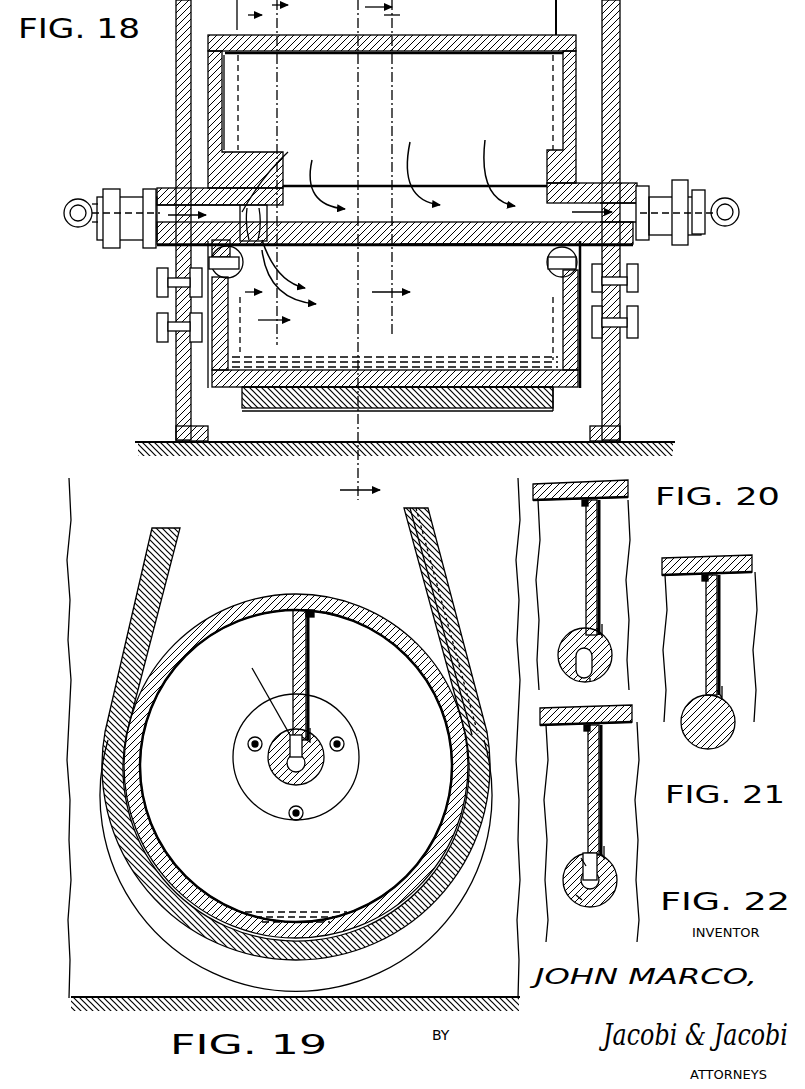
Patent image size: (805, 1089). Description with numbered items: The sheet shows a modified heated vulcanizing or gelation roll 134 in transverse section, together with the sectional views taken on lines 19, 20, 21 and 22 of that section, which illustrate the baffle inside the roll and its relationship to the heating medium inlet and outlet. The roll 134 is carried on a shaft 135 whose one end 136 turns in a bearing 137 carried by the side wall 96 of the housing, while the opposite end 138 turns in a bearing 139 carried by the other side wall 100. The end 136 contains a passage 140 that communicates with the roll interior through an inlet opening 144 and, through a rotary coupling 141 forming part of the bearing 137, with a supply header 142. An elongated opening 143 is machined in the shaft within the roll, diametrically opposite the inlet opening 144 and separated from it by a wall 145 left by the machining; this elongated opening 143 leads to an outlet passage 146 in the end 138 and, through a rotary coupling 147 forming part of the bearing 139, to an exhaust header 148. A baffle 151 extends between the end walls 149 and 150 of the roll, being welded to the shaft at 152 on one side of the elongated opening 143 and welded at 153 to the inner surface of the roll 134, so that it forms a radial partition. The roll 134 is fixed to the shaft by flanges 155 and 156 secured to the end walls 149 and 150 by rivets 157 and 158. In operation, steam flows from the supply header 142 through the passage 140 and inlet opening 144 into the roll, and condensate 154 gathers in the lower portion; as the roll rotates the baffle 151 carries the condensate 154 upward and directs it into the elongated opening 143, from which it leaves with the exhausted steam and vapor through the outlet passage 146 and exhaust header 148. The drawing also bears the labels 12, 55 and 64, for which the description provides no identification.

In FIG. 18, the tank wall 12 is at (488, 411).
In FIG. 19, the tank wall 12 is at (440, 572).
In FIG. 18, the section line 19— 19 is at (366, 262).
In FIG. 18, the section line 20— 20 is at (249, 183).
In FIG. 18, the section line 21— 21 is at (274, 174).
In FIG. 18, the section line 22— 22 is at (391, 167).
In FIG. 18, the trough 55 is at (565, 392).
In FIG. 19, the trough 55 is at (418, 552).
In FIG. 18, the tank bottom 64 is at (322, 411).
In FIG. 19, the tank bottom 64 is at (452, 628).
In FIG. 18, the side wall 96 is at (178, 386).
In FIG. 18, the side wall 100 is at (621, 375).
In FIG. 18, the roll 134 is at (578, 45).
In FIG. 19, the roll 134 is at (266, 606).
In FIG. 20, the roll 134 is at (556, 482).
In FIG. 21, the roll 134 is at (718, 558).
In FIG. 22, the roll 134 is at (572, 708).
In FIG. 18, the shaft 135 is at (468, 247).
In FIG. 19, the shaft 135 is at (322, 788).
In FIG. 20, the shaft 135 is at (574, 640).
In FIG. 21, the shaft 135 is at (724, 744).
In FIG. 22, the shaft 135 is at (604, 902).
In FIG. 18, the end of shaft 136 is at (196, 180).
In FIG. 18, the bearing 137 is at (144, 192).
In FIG. 18, the opposite end of shaft 138 is at (618, 172).
In FIG. 18, the bearing 139 is at (649, 191).
In FIG. 18, the passage 140 is at (281, 177).
In FIG. 18, the rotary coupling 141 is at (115, 249).
In FIG. 18, the supply header 142 is at (70, 203).
In FIG. 18, the elongated opening 143 is at (429, 173).
In FIG. 19, the elongated opening 143 is at (286, 748).
In FIG. 22, the elongated opening 143 is at (588, 862).
In FIG. 18, the opening 144 is at (295, 272).
In FIG. 20, the opening 144 is at (590, 680).
In FIG. 18, the wall 145 is at (328, 184).
In FIG. 18, the outlet passage 146 is at (562, 208).
In FIG. 19, the outlet passage 146 is at (278, 805).
In FIG. 22, the outlet passage 146 is at (580, 900).
In FIG. 18, the rotary coupling 147 is at (677, 246).
In FIG. 18, the exhaust header 148 is at (731, 200).
In FIG. 18, the end wall 149 is at (226, 98).
In FIG. 18, the end wall 150 is at (562, 80).
In FIG. 19, the baffle 151 is at (312, 664).
In FIG. 20, the baffle 151 is at (575, 567).
In FIG. 21, the baffle 151 is at (706, 634).
In FIG. 22, the baffle 151 is at (586, 772).
In FIG. 19, the welding 152 is at (312, 740).
In FIG. 20, the welding 152 is at (600, 630).
In FIG. 21, the welding 152 is at (722, 700).
In FIG. 22, the welding 152 is at (606, 860).
In FIG. 19, the welding 153 is at (324, 612).
In FIG. 20, the welding 153 is at (580, 505).
In FIG. 21, the welding 153 is at (722, 582).
In FIG. 22, the welding 153 is at (602, 730).
In FIG. 18, the condensate 154 is at (462, 362).
In FIG. 19, the condensate 154 is at (296, 911).
In FIG. 18, the flange 155 is at (242, 152).
In FIG. 18, the flange 156 is at (550, 158).
In FIG. 19, the flange 156 is at (360, 766).
In FIG. 18, the rivets 157 is at (157, 309).
In FIG. 18, the rivets 158 is at (548, 262).
In FIG. 19, the rivets 158 is at (302, 820).